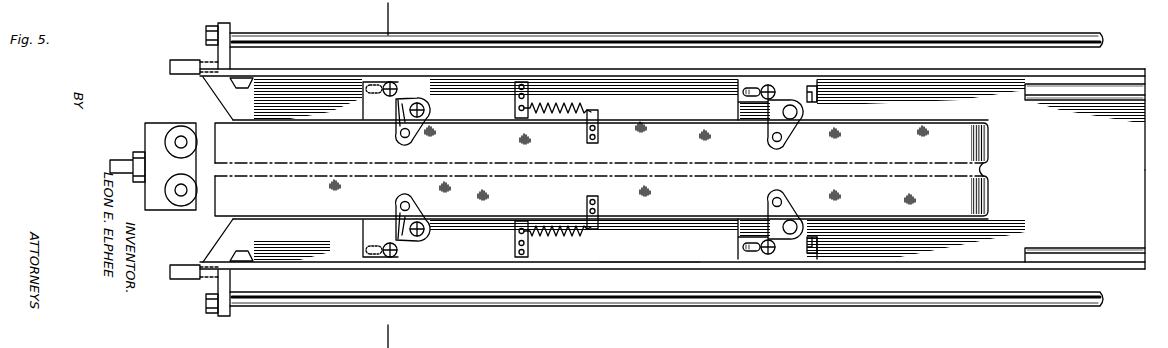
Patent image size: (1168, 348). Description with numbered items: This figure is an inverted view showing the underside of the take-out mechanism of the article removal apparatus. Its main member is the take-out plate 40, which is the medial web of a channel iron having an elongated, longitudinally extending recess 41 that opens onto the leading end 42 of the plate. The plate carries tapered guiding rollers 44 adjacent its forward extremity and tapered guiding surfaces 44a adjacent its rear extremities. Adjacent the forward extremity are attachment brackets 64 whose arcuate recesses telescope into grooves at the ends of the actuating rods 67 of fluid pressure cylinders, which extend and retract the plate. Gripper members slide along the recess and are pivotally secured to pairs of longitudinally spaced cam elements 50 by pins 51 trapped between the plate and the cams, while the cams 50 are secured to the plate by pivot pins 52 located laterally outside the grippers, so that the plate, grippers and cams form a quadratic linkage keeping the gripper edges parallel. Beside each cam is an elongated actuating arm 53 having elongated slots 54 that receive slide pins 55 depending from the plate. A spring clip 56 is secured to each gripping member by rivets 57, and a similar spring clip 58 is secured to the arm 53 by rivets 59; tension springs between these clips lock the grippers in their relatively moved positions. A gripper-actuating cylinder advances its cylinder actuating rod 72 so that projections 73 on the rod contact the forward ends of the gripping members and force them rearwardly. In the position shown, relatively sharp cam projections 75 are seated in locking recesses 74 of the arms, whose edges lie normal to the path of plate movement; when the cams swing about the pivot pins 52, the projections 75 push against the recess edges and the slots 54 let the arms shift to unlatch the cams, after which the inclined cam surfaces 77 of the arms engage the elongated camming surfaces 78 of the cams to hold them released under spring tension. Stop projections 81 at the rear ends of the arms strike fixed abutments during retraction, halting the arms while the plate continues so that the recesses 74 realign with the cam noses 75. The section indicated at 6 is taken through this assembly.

The section line 6- 6 is at (388, 15).
The take-out plate 40 is at (1031, 191).
The longitudinally extending recess 41 is at (986, 168).
The leading end 42 is at (214, 95).
The tapered guiding rollers 44 is at (240, 84).
The tapered guiding surfaces 44a is at (1064, 96).
The cam elements 50 is at (420, 122).
The pins 51 is at (407, 139).
The pivot pins 52 is at (791, 105).
The actuating arm 53 is at (654, 262).
The elongated slots 54 is at (752, 87).
The slide pins 55 is at (769, 85).
The spring clip 56 is at (598, 134).
The rivets 57 is at (589, 137).
The spring clip 58 is at (528, 93).
The rivets 59 is at (518, 95).
The attachment brackets 64 is at (229, 55).
The actuating rods 67 is at (483, 308).
The cylinder actuating rod 72 is at (121, 160).
The projections 73 is at (181, 206).
The locking recesses 74 is at (393, 101).
The cam projections 75 is at (399, 118).
The inclined cam surfaces 77 is at (373, 104).
The elongated camming surfaces 78 is at (421, 106).
The stop projections 81 is at (813, 87).